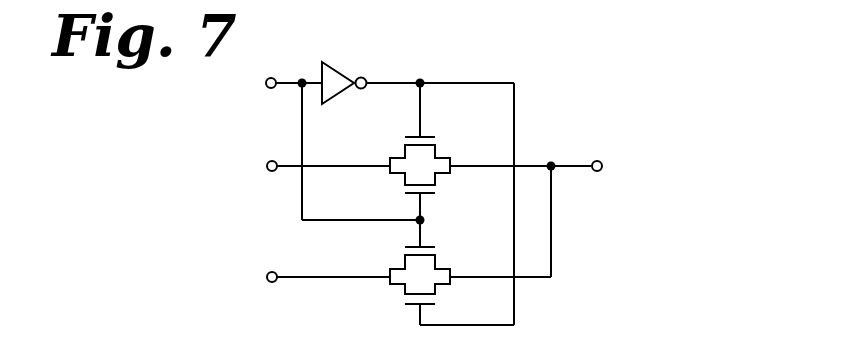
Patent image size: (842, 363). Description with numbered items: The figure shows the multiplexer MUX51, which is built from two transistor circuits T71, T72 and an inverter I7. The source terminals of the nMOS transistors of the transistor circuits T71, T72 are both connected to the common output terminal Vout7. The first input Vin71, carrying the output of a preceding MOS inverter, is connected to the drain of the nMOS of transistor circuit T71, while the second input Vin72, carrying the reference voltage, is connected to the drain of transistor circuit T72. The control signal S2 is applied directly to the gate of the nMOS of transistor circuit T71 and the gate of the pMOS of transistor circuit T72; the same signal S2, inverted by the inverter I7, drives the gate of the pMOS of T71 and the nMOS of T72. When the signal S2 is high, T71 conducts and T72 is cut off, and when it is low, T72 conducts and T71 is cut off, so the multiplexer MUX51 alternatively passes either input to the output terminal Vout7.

The inverter I7 is at (344, 71).
The transistor circuit T71 is at (448, 164).
The transistor circuit T72 is at (448, 280).
The multiplexer MUX51 is at (600, 99).
The signal S2 is at (254, 84).
The input terminal Vin71 is at (240, 167).
The input terminal Vin72 is at (240, 278).
The common output terminal Vout7 is at (629, 166).